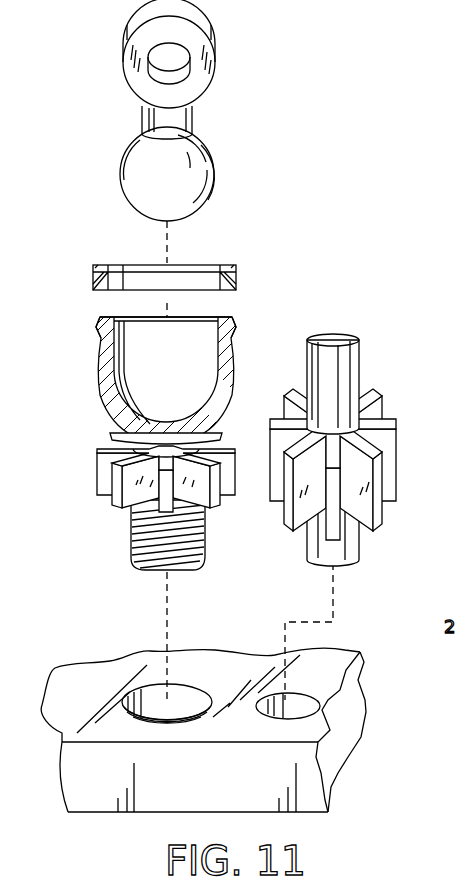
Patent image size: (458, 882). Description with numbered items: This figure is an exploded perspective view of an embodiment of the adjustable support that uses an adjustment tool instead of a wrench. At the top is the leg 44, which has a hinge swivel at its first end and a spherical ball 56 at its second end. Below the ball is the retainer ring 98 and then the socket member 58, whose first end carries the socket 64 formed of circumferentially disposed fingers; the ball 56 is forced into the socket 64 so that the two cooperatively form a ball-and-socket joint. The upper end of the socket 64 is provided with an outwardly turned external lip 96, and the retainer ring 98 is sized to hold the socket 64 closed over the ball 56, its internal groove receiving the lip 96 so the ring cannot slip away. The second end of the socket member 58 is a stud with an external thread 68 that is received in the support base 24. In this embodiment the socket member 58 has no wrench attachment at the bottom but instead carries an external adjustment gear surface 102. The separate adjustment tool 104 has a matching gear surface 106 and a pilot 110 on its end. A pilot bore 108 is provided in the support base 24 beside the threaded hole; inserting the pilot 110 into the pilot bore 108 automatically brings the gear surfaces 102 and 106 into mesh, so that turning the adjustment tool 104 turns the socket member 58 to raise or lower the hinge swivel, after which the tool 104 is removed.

The support base 24 is at (62, 665).
The leg 44 is at (193, 115).
The spherical ball 56 is at (207, 172).
The socket member 58 is at (117, 435).
The socket 64 is at (234, 375).
The thread 68 is at (131, 535).
The external lip 96 is at (227, 327).
The retainer ring 98 is at (236, 280).
The adjustment gear surface 102 is at (102, 465).
The adjustment tool 104 is at (360, 365).
The gear surface 106 is at (397, 435).
The pilot bore 108 is at (325, 700).
The pilot 110 is at (360, 548).